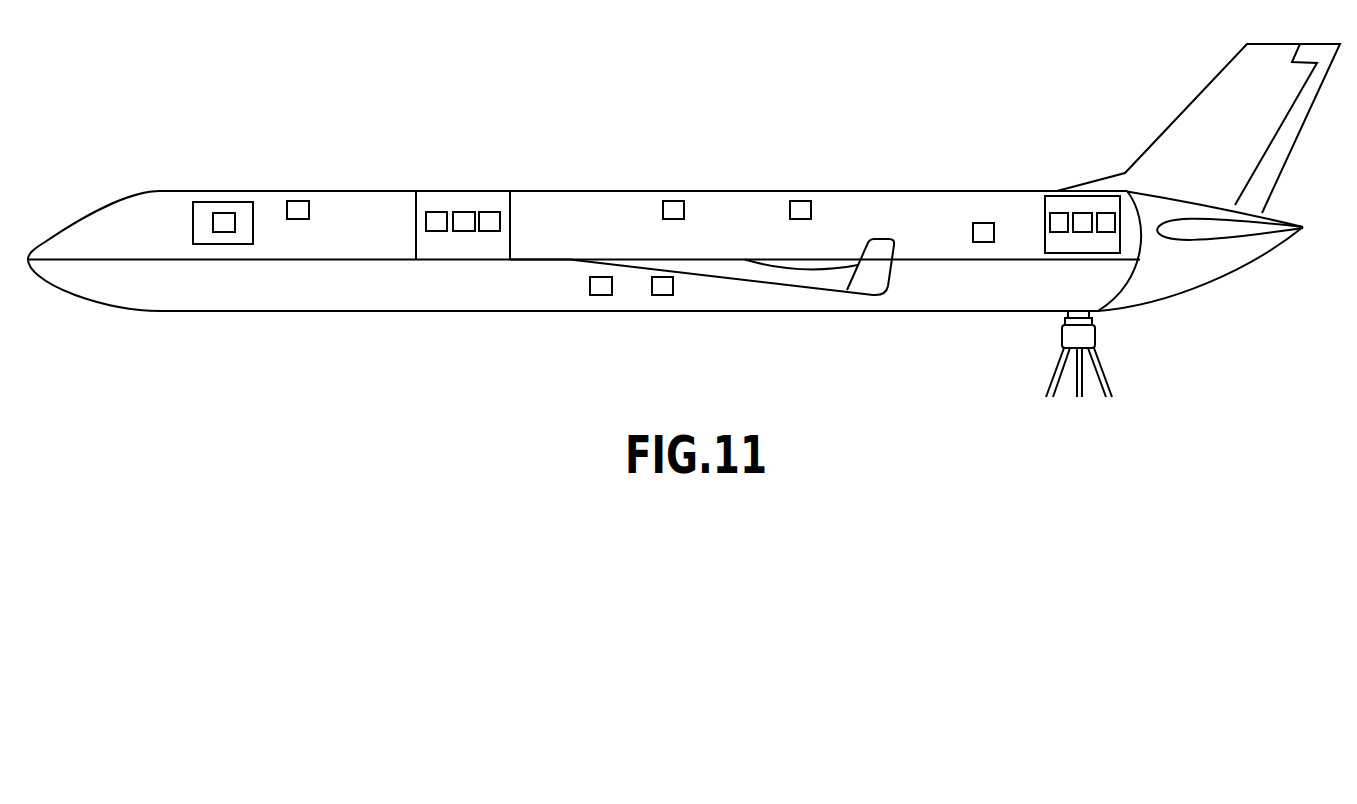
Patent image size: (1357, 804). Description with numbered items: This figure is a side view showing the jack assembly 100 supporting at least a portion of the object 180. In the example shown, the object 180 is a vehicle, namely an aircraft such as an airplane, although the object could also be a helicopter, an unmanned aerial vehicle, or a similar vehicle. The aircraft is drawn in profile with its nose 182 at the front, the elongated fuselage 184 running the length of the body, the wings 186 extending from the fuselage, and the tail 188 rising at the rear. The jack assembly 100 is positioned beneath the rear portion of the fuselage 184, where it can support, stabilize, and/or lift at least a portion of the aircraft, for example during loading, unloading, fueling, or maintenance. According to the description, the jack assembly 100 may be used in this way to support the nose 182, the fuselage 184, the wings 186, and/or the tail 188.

The object 180 is at (126, 98).
The nose 182 is at (75, 222).
The fuselage 184 is at (577, 215).
The wings 186 is at (797, 278).
The tail 188 is at (1188, 103).
The jack assembly 100 is at (1101, 336).